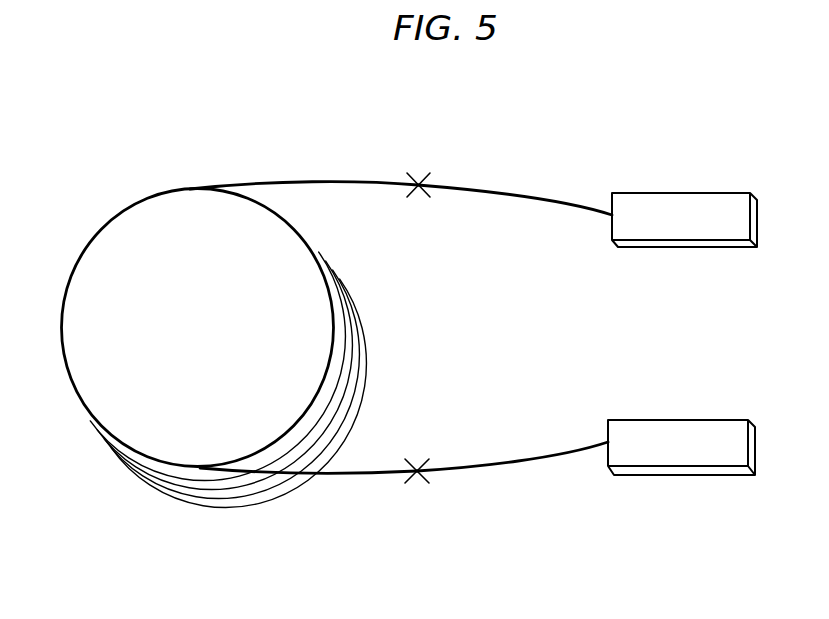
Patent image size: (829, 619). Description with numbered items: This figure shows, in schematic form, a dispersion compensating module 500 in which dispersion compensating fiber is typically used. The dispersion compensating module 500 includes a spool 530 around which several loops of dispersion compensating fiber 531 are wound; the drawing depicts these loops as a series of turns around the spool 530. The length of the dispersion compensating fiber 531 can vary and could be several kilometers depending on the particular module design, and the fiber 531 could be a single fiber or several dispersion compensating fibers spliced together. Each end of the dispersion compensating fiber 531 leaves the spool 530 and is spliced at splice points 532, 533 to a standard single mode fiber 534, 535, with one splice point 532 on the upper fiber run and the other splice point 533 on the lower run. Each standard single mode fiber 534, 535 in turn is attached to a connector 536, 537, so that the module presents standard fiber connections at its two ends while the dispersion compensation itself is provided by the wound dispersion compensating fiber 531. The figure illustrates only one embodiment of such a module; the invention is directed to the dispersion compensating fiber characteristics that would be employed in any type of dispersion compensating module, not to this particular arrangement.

The dispersion compensating module 500 is at (427, 112).
The spool 530 is at (108, 222).
The dispersion compensating fiber 531 is at (351, 498).
The splice point 532 is at (410, 197).
The splice point 533 is at (409, 460).
The standard single mode fiber 534 is at (523, 196).
The standard single mode fiber 535 is at (519, 462).
The connector 536 is at (678, 193).
The connector 537 is at (676, 420).